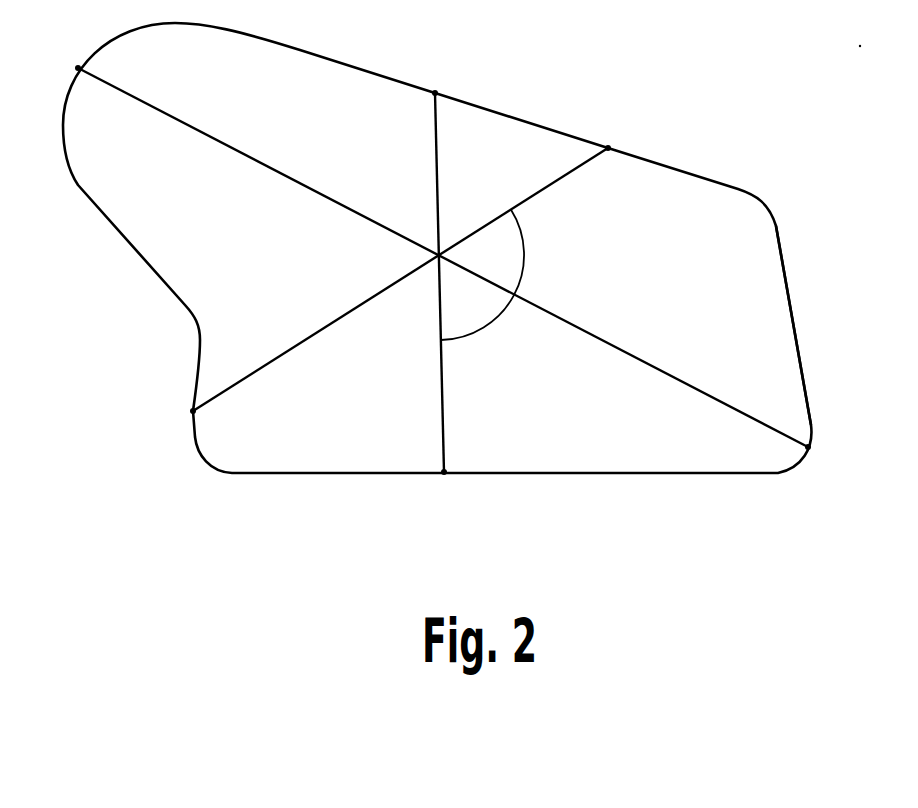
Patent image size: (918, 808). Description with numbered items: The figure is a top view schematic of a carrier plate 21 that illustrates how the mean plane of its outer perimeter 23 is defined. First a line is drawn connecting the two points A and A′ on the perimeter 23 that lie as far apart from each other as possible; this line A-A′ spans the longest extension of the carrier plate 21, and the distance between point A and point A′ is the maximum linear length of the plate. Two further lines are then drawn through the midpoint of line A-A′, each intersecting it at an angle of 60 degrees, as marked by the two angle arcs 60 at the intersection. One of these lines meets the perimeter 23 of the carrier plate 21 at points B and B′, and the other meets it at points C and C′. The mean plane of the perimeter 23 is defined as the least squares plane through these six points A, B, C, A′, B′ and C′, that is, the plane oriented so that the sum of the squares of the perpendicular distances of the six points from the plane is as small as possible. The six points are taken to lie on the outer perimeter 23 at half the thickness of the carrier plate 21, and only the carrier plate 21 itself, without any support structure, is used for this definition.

The carrier plate 21 is at (692, 203).
The perimeter 23 is at (800, 310).
The 60° angle 60 is at (482, 275).
The point A is at (64, 64).
The point B is at (435, 73).
The point C is at (614, 128).
The point A' A′ is at (825, 451).
The point B' B′ is at (449, 492).
The point C' C′ is at (179, 415).